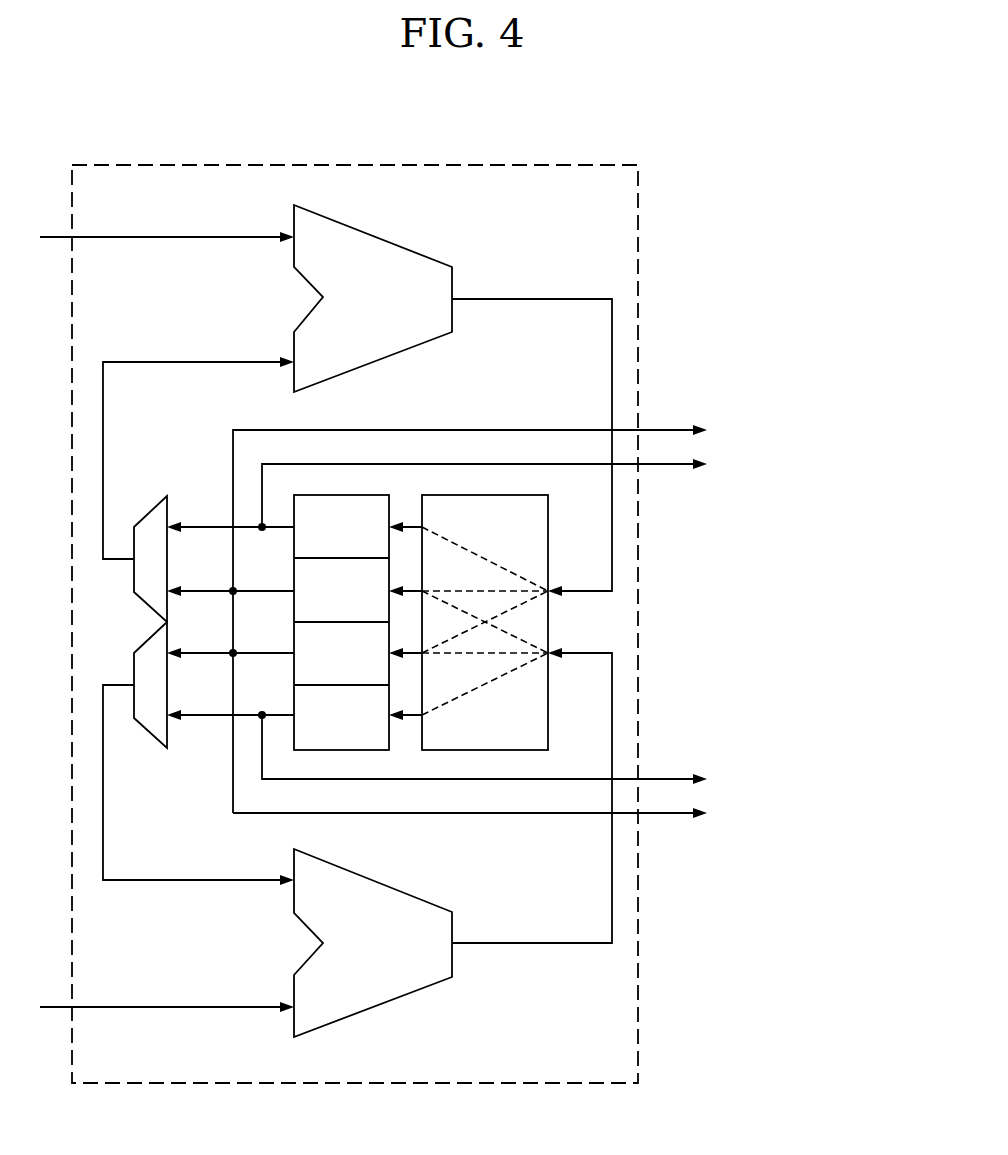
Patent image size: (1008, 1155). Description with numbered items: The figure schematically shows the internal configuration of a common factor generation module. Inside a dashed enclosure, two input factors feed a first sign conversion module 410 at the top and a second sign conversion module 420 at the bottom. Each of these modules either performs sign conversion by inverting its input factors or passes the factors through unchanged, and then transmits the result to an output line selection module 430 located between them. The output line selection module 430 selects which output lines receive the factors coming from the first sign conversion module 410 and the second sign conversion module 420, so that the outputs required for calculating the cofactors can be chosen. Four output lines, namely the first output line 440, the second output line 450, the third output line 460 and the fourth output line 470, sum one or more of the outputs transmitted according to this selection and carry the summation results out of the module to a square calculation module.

The first sign conversion module 410 is at (396, 243).
The second sign conversion module 420 is at (404, 892).
The output line selection module 430 is at (549, 622).
The first output line 440 is at (672, 468).
The second output line 450 is at (669, 428).
The third output line 460 is at (672, 817).
The fourth output line 470 is at (669, 778).